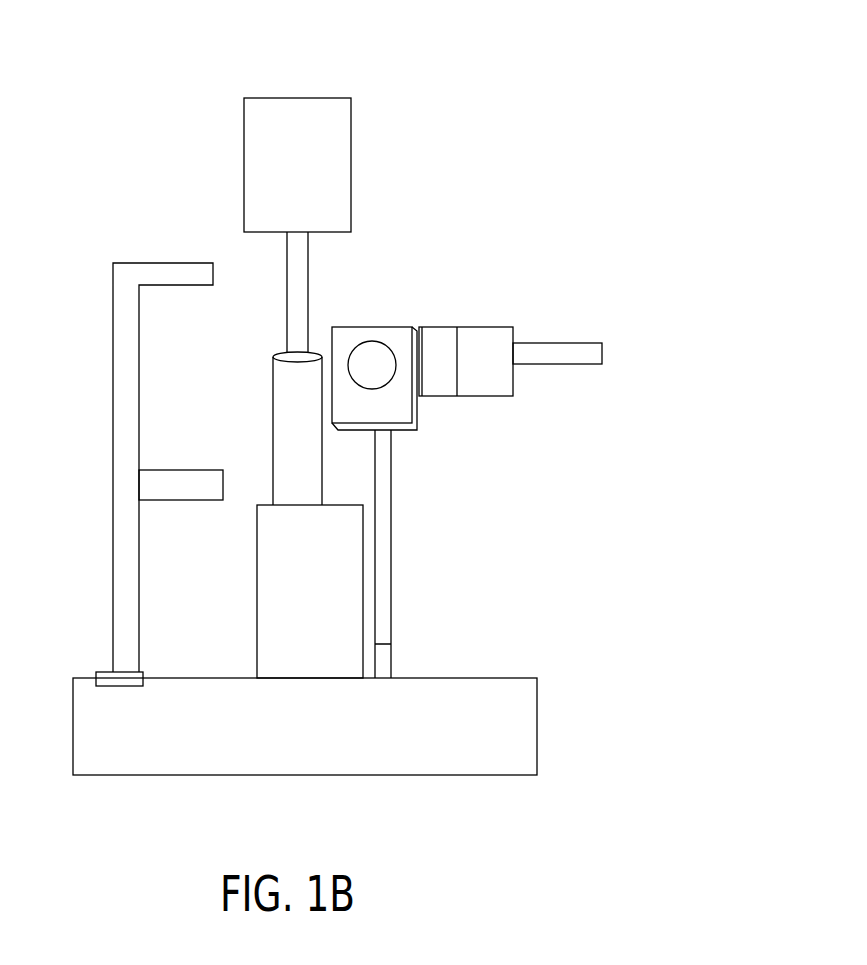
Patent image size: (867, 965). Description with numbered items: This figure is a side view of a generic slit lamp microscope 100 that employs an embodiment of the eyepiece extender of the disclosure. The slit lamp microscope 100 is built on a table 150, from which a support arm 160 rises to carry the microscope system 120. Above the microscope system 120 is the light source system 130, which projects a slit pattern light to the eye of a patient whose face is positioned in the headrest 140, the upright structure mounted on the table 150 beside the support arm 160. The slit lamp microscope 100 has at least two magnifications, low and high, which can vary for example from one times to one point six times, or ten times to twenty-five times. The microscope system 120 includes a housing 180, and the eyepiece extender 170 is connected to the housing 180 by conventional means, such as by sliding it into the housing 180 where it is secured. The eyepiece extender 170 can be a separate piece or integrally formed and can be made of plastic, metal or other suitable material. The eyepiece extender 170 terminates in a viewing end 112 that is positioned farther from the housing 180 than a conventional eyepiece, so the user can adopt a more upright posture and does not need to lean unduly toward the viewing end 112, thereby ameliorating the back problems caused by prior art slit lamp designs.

The slit lamp microscope 100 is at (122, 186).
The viewing end 112 is at (621, 357).
The microscope system 120 is at (498, 270).
The light source system 130 is at (377, 89).
The headrest 140 is at (120, 443).
The table 150 is at (508, 725).
The support arm 160 is at (381, 527).
The eyepiece extender 170 is at (542, 347).
The housing 180 is at (490, 393).